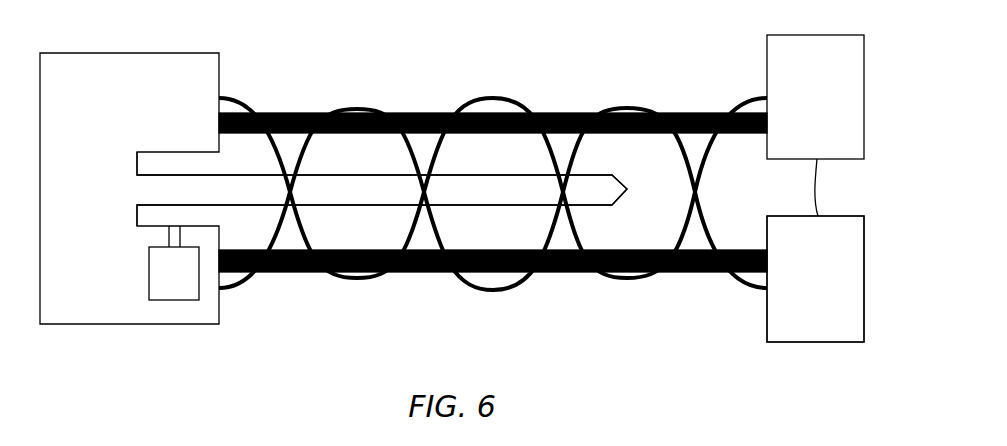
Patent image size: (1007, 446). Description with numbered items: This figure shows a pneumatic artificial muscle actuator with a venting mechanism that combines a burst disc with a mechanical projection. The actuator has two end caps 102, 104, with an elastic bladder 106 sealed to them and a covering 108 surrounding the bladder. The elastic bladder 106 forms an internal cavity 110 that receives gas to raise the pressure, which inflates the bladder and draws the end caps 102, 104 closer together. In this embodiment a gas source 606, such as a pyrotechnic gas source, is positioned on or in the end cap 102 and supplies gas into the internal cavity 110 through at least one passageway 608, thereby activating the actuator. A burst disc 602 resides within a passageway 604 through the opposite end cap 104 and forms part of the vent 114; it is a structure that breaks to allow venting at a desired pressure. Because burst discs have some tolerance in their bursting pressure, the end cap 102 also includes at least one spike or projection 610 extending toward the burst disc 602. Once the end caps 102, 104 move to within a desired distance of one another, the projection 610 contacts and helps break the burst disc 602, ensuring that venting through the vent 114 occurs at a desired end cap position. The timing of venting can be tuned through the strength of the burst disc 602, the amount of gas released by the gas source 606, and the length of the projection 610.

The end cap 102 is at (222, 325).
The end cap 104 is at (766, 322).
The elastic bladder 106 is at (307, 112).
The covering 108 is at (493, 97).
The internal cavity 110 is at (505, 159).
The vent 114 is at (783, 147).
The burst disc 602 is at (812, 203).
The passageway 604 is at (843, 218).
The gas source 606 is at (147, 289).
The passageway 608 is at (165, 235).
The projection 610 is at (170, 187).